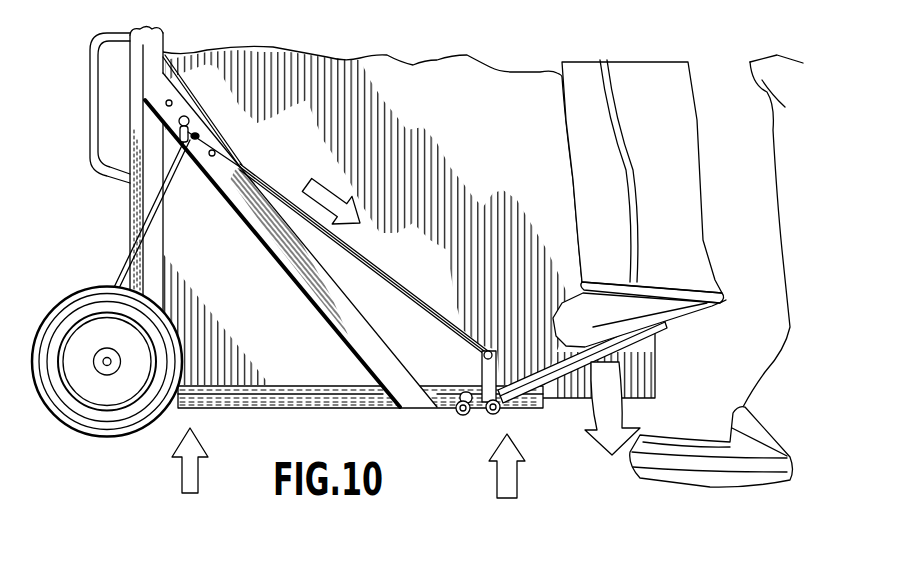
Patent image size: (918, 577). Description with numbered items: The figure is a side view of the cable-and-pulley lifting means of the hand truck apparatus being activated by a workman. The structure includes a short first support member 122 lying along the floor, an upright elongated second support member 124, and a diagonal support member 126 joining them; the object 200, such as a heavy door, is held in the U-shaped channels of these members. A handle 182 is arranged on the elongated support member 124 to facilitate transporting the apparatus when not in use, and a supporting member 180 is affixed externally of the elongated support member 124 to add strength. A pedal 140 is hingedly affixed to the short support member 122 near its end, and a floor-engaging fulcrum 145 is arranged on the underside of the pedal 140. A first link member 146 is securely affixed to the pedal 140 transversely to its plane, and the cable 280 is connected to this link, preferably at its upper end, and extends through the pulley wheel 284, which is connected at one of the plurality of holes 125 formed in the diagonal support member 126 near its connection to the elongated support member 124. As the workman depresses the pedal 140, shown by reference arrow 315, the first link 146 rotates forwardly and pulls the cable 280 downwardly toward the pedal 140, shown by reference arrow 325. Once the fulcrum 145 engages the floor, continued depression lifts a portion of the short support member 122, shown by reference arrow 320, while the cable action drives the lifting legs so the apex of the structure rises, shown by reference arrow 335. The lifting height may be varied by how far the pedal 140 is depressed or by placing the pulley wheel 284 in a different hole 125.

The first support member 122 is at (262, 392).
The second support member 124 is at (150, 143).
The holes 125 is at (198, 105).
The diagonal support member 126 is at (270, 242).
The pedal 140 is at (527, 370).
The floor-engaging fulcrum 145 is at (486, 413).
The first link member 146 is at (497, 352).
The supporting member 180 is at (135, 200).
The handle 182 is at (94, 67).
The object 200 is at (492, 127).
The cable 280 is at (430, 313).
The pulley wheel 284 is at (191, 150).
The reference arrow 315 is at (592, 420).
The reference arrow 320 is at (522, 482).
The reference arrow 325 is at (322, 183).
The reference arrow 335 is at (183, 472).